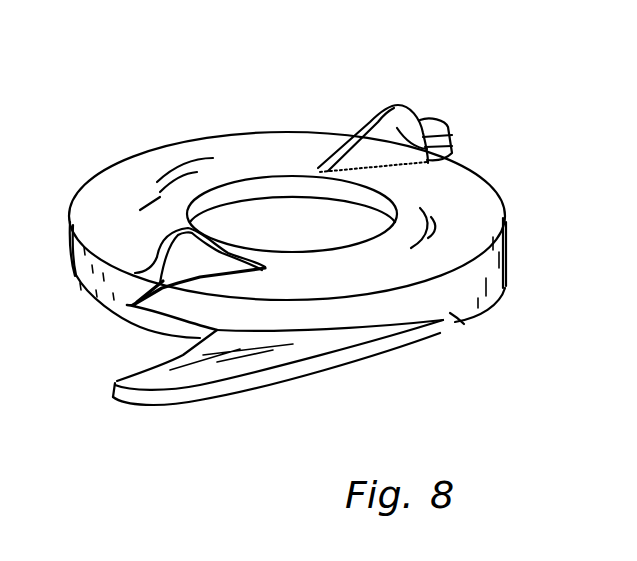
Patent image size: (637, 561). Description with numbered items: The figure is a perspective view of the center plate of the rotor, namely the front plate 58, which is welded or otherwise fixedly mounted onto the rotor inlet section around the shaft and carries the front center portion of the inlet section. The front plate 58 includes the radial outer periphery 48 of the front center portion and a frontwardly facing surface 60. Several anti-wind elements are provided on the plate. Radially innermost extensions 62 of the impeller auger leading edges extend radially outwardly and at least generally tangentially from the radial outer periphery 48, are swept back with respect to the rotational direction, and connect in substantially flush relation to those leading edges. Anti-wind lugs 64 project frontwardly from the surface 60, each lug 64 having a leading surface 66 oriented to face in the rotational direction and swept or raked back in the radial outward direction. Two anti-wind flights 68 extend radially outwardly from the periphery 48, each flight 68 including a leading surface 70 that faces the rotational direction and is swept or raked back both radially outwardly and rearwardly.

The radial outer periphery 48 is at (465, 322).
The front plate 58 is at (505, 282).
The frontwardly facing surface 60 is at (230, 150).
The radially innermost extensions 62 is at (352, 133).
The anti-wind lugs 64 is at (178, 226).
The leading surface 66 is at (453, 147).
The anti-wind flights 68 is at (123, 308).
The leading surface 70 is at (298, 318).